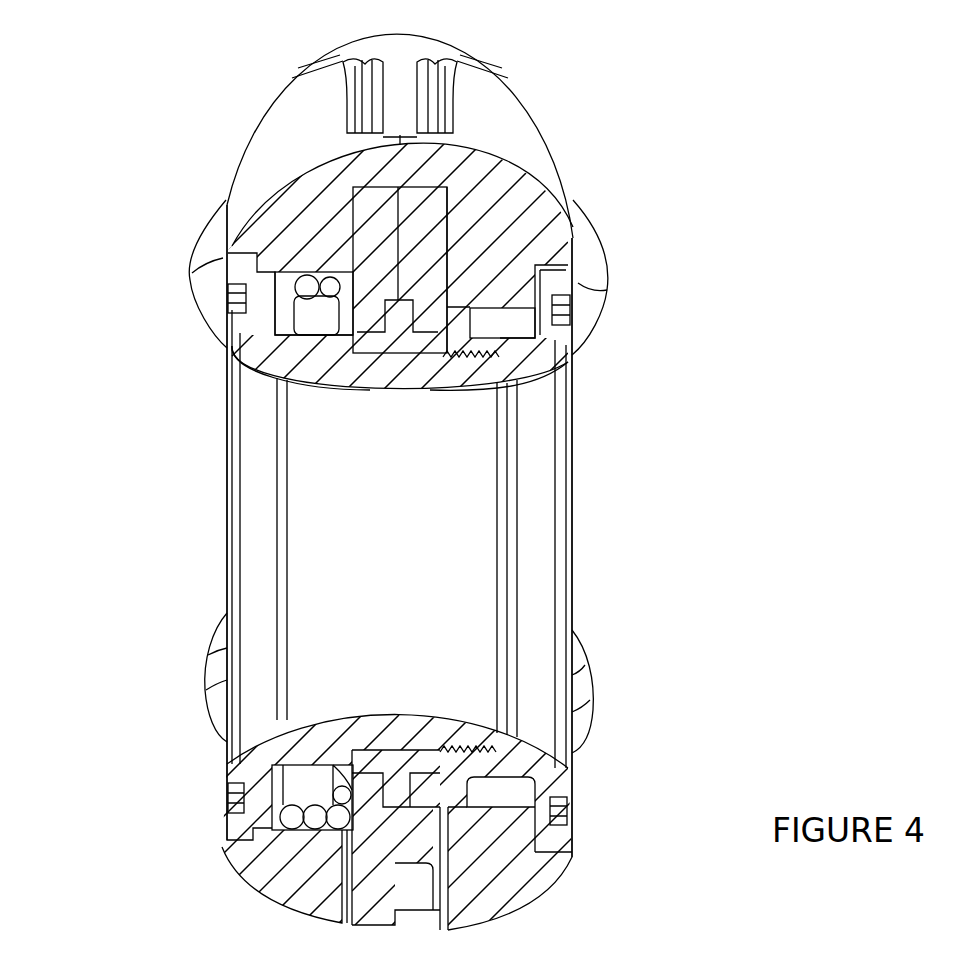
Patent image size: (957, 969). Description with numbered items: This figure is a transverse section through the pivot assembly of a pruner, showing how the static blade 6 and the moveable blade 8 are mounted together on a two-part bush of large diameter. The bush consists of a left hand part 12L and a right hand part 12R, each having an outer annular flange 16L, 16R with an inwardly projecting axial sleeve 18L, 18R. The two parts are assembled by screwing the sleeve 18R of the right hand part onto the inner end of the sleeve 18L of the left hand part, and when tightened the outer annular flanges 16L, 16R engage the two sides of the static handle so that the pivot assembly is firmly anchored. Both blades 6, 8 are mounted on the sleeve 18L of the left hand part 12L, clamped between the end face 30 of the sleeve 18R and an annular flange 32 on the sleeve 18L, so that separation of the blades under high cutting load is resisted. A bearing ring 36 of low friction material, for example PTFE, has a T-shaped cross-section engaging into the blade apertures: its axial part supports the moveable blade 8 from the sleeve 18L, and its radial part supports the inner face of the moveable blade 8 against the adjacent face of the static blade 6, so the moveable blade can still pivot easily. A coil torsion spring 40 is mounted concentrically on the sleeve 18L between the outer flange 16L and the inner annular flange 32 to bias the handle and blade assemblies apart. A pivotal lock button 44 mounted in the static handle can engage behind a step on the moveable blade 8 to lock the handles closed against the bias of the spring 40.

The blade 6 is at (445, 202).
The blade 8 is at (372, 223).
The left hand part 12L is at (333, 390).
The right hand part 12R is at (545, 365).
The outer annular flange 16L is at (243, 322).
The outer annular flange 16R is at (555, 288).
The axial sleeve 18L is at (342, 342).
The axial sleeve 18R is at (483, 337).
The end face 30 is at (453, 313).
The annular flange 32 is at (348, 320).
The bearing ring 36 is at (398, 340).
The spring 40 is at (300, 318).
The lock button 44 is at (421, 66).